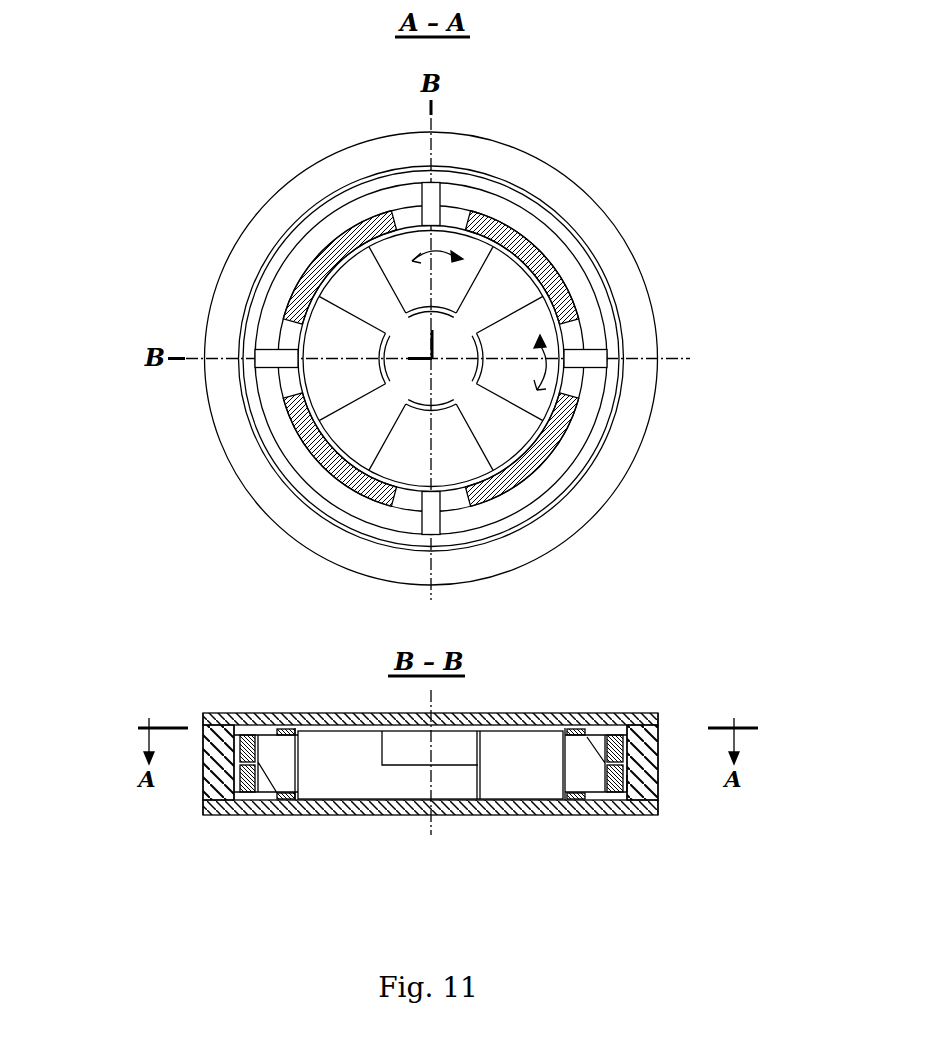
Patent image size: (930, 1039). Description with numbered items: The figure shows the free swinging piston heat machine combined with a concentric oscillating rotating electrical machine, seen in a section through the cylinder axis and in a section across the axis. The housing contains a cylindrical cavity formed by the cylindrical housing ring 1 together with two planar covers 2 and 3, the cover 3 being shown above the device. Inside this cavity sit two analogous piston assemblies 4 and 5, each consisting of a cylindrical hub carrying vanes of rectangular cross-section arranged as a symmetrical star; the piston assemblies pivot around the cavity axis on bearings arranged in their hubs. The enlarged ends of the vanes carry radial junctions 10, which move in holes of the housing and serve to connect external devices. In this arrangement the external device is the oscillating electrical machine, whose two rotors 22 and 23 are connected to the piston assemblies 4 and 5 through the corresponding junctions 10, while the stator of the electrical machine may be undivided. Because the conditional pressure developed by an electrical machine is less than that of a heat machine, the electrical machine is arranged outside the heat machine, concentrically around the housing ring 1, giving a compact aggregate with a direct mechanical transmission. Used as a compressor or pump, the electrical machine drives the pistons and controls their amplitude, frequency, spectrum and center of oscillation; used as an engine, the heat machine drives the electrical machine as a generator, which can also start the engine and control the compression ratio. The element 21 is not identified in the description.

The cylindrical housing ring 1 is at (323, 263).
The planar cover 2 is at (205, 815).
The planar cover 3 is at (220, 713).
The piston assembly 4 is at (525, 391).
The piston assembly 5 is at (401, 448).
The radial junction 10 is at (582, 360).
The outer housing ring 21 is at (619, 279).
The rotor 22 is at (611, 333).
The rotor 23 is at (627, 782).